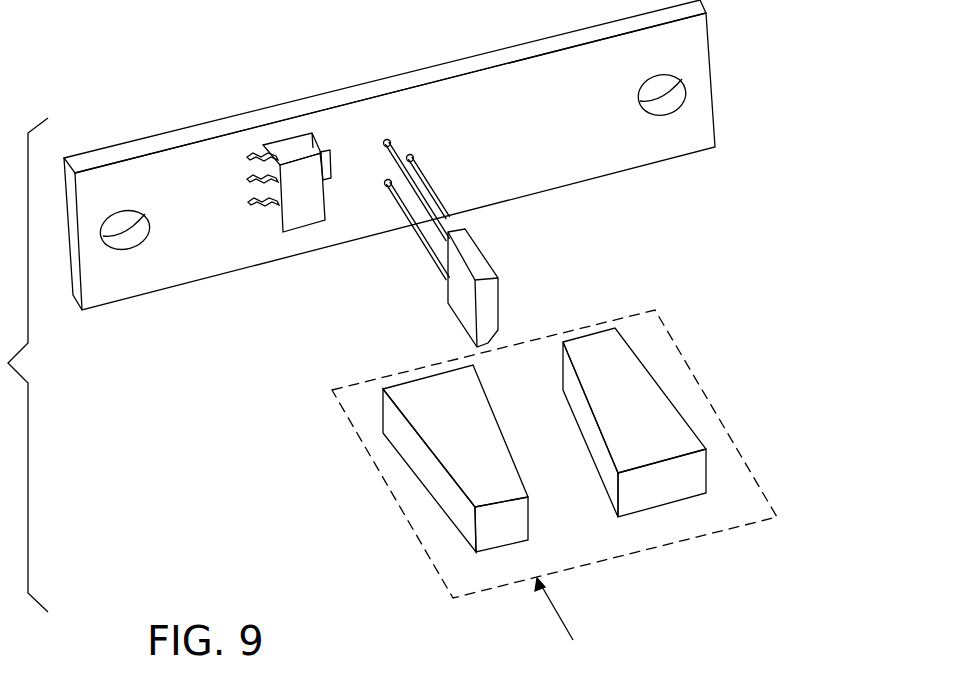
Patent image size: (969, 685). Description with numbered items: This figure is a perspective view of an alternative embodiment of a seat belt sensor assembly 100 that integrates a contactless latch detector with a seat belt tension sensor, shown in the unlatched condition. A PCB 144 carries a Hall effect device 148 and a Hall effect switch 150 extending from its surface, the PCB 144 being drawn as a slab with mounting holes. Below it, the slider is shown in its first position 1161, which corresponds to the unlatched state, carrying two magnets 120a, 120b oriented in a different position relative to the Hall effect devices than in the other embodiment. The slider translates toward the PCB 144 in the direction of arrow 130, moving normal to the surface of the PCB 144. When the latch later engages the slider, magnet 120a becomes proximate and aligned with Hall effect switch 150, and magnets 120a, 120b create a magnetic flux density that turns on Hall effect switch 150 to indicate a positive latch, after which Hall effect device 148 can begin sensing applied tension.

The PCB 144 is at (410, 75).
The Hall effect switch 150 is at (290, 147).
The Hall effect device 148 is at (478, 257).
The magnet 120a is at (410, 393).
The magnet 120b is at (613, 378).
The first position of slider 1161 is at (739, 444).
The seat belt sensor assembly 100 is at (569, 481).
The arrow 130 is at (560, 622).